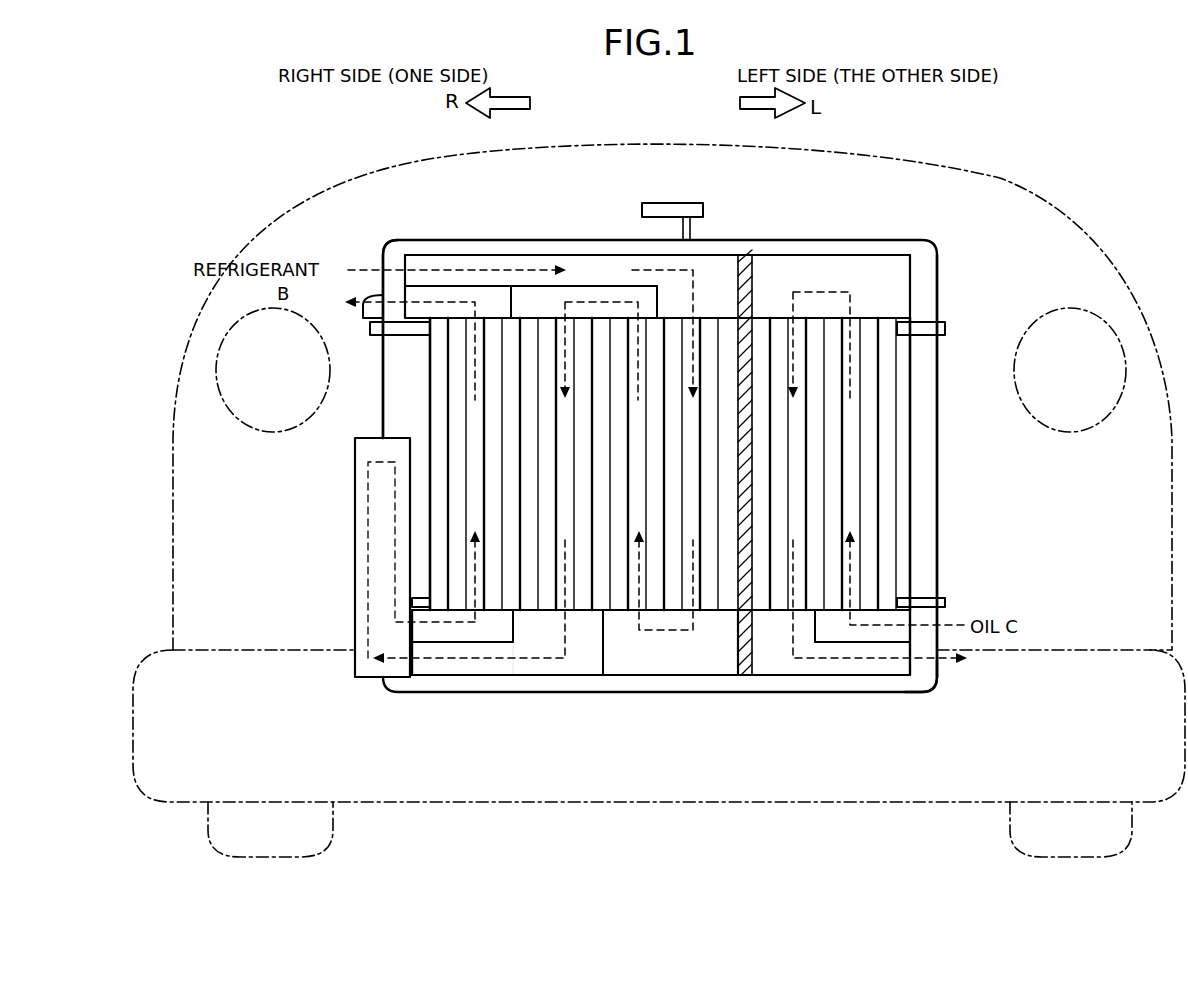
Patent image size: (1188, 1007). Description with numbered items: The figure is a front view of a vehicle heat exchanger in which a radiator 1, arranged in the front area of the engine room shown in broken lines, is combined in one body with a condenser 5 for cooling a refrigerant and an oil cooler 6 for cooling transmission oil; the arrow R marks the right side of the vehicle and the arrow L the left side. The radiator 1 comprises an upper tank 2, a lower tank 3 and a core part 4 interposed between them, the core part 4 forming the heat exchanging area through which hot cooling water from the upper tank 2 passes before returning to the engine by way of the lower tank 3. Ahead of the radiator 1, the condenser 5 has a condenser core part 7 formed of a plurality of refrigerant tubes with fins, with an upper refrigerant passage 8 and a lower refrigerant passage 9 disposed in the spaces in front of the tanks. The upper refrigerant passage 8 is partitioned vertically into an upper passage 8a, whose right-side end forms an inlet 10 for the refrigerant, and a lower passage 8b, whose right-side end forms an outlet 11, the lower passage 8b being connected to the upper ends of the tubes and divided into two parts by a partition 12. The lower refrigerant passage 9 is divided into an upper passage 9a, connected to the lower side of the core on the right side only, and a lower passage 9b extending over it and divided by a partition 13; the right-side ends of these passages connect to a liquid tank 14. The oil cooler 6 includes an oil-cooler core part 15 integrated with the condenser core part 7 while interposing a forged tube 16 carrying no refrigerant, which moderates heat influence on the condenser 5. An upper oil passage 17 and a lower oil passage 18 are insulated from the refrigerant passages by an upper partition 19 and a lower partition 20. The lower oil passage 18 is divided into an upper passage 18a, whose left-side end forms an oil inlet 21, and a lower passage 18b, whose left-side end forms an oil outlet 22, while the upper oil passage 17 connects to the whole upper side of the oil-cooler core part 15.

The radiator 1 is at (625, 200).
The upper tank 2 is at (882, 240).
The lower tank 3 is at (657, 693).
The core part 4 is at (920, 393).
The condenser 5 is at (470, 212).
The oil cooler 6 is at (836, 212).
The condenser core part 7 is at (440, 373).
The upper refrigerant passage 8 is at (573, 255).
The upper passage 8a is at (606, 280).
The lower passage 8b is at (509, 314).
The lower refrigerant passage 9 is at (490, 692).
The upper passage 9a is at (509, 641).
The lower passage 9b is at (553, 646).
The inlet 10 is at (405, 257).
The outlet 11 is at (375, 330).
The partition 12 is at (512, 318).
The partition 13 is at (603, 655).
The liquid tank 14 is at (356, 540).
The oil-cooler core part 15 is at (893, 500).
The forged tube 16 is at (757, 583).
The upper oil passage 17 is at (912, 288).
The lower oil passage 18 is at (843, 676).
The upper passage 18a is at (857, 641).
The lower passage 18b is at (795, 653).
The upper partition 19 is at (752, 292).
The lower partition 20 is at (742, 655).
The inlet 21 is at (925, 598).
The outlet 22 is at (924, 690).